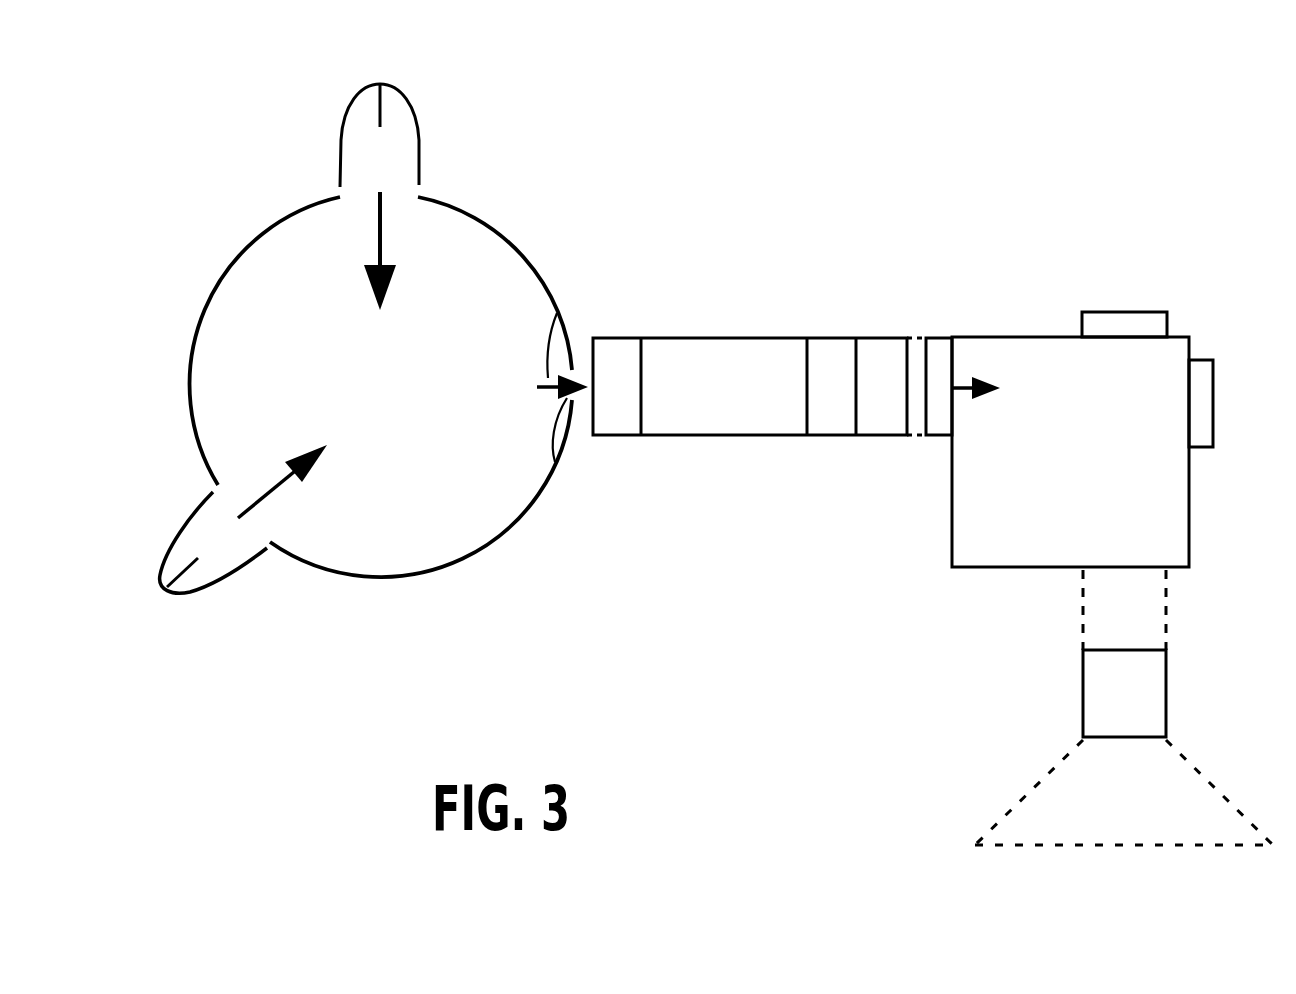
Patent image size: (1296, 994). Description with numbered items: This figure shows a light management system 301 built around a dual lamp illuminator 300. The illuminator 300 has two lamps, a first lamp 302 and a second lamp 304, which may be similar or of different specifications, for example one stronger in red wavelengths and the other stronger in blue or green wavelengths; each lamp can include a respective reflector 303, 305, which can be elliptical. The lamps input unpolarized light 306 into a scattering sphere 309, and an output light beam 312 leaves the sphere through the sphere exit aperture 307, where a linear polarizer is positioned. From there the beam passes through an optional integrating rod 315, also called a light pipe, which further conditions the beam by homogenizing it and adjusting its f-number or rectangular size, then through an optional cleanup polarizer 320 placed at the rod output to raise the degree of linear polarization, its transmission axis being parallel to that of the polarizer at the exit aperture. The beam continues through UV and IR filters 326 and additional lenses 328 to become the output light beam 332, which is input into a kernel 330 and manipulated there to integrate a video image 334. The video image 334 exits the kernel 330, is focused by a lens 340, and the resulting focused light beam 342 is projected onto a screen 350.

The dual lamp illuminator 300 is at (477, 553).
The light management system 301 is at (628, 108).
The lamp #1 302 is at (380, 122).
The reflector 303 is at (340, 160).
The lamp #2 304 is at (190, 570).
The reflector 305 is at (168, 550).
The unpolarized light 306 is at (378, 220).
The sphere exit aperture 307 is at (555, 462).
The scattering sphere 309 is at (530, 287).
The output light beam 312 is at (557, 313).
The integrating rod 315 is at (747, 423).
The cleanup polarizer 320 is at (833, 347).
The UV and IR filters 326 is at (870, 428).
The additional lenses 328 is at (933, 437).
The kernel 330 is at (1053, 316).
The output light beam 332 is at (970, 384).
The video image 334 is at (1083, 620).
The lens 340 is at (1083, 698).
The focused light beam 342 is at (1025, 799).
The screen 350 is at (1058, 847).